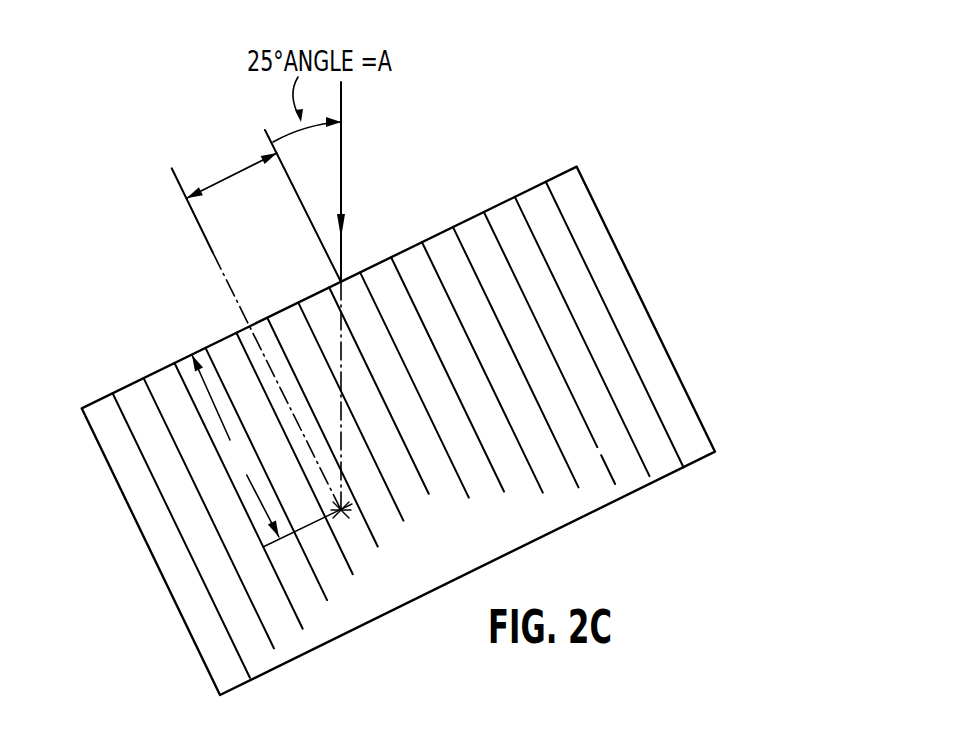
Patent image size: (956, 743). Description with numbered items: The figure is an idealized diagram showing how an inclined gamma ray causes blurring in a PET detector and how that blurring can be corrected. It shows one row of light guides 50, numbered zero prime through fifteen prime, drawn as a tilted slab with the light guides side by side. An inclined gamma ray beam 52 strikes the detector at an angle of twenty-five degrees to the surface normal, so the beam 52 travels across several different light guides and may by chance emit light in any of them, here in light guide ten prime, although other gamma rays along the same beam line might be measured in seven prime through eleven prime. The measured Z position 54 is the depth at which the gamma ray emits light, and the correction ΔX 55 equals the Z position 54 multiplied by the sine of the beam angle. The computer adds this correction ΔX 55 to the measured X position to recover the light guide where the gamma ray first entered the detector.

The light guides 50 is at (697, 338).
The inclined gamma ray beam 52 is at (344, 200).
The measured Z position 54 is at (272, 451).
The correction ΔX 55 is at (234, 178).